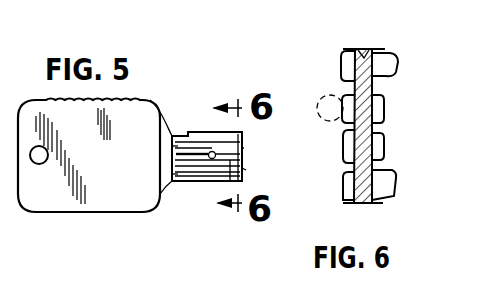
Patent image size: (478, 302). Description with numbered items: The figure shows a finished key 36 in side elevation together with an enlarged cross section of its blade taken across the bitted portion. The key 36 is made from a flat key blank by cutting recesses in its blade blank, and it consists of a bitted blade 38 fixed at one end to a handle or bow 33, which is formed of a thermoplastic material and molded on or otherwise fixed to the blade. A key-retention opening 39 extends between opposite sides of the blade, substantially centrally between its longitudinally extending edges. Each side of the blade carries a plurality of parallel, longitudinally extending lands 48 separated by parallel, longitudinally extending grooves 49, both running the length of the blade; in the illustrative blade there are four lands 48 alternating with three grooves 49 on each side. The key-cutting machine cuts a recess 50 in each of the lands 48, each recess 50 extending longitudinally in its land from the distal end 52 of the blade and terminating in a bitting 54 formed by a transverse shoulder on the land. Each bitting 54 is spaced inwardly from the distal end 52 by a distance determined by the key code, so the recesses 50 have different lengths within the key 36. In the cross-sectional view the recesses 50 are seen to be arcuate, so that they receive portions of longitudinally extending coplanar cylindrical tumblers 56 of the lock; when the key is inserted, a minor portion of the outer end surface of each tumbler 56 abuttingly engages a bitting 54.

In FIG. 5, the handle or bow 33 is at (40, 213).
In FIG. 5, the finished key 36 is at (80, 227).
In FIG. 5, the bitted blade 38 is at (174, 182).
In FIG. 6, the bitted blade 38 is at (372, 204).
In FIG. 5, the key-retention opening 39 is at (172, 157).
In FIG. 5, the lands 48 is at (172, 174).
In FIG. 6, the lands 48 is at (384, 148).
In FIG. 5, the grooves 49 is at (172, 146).
In FIG. 6, the grooves 49 is at (380, 89).
In FIG. 5, the recess 50 is at (244, 166).
In FIG. 6, the recess 50 is at (370, 49).
In FIG. 5, the distal end 52 is at (248, 170).
In FIG. 5, the bitting 54 is at (240, 132).
In FIG. 6, the bitting 54 is at (343, 72).
In FIG. 6, the cylindrical tumblers 56 is at (322, 97).